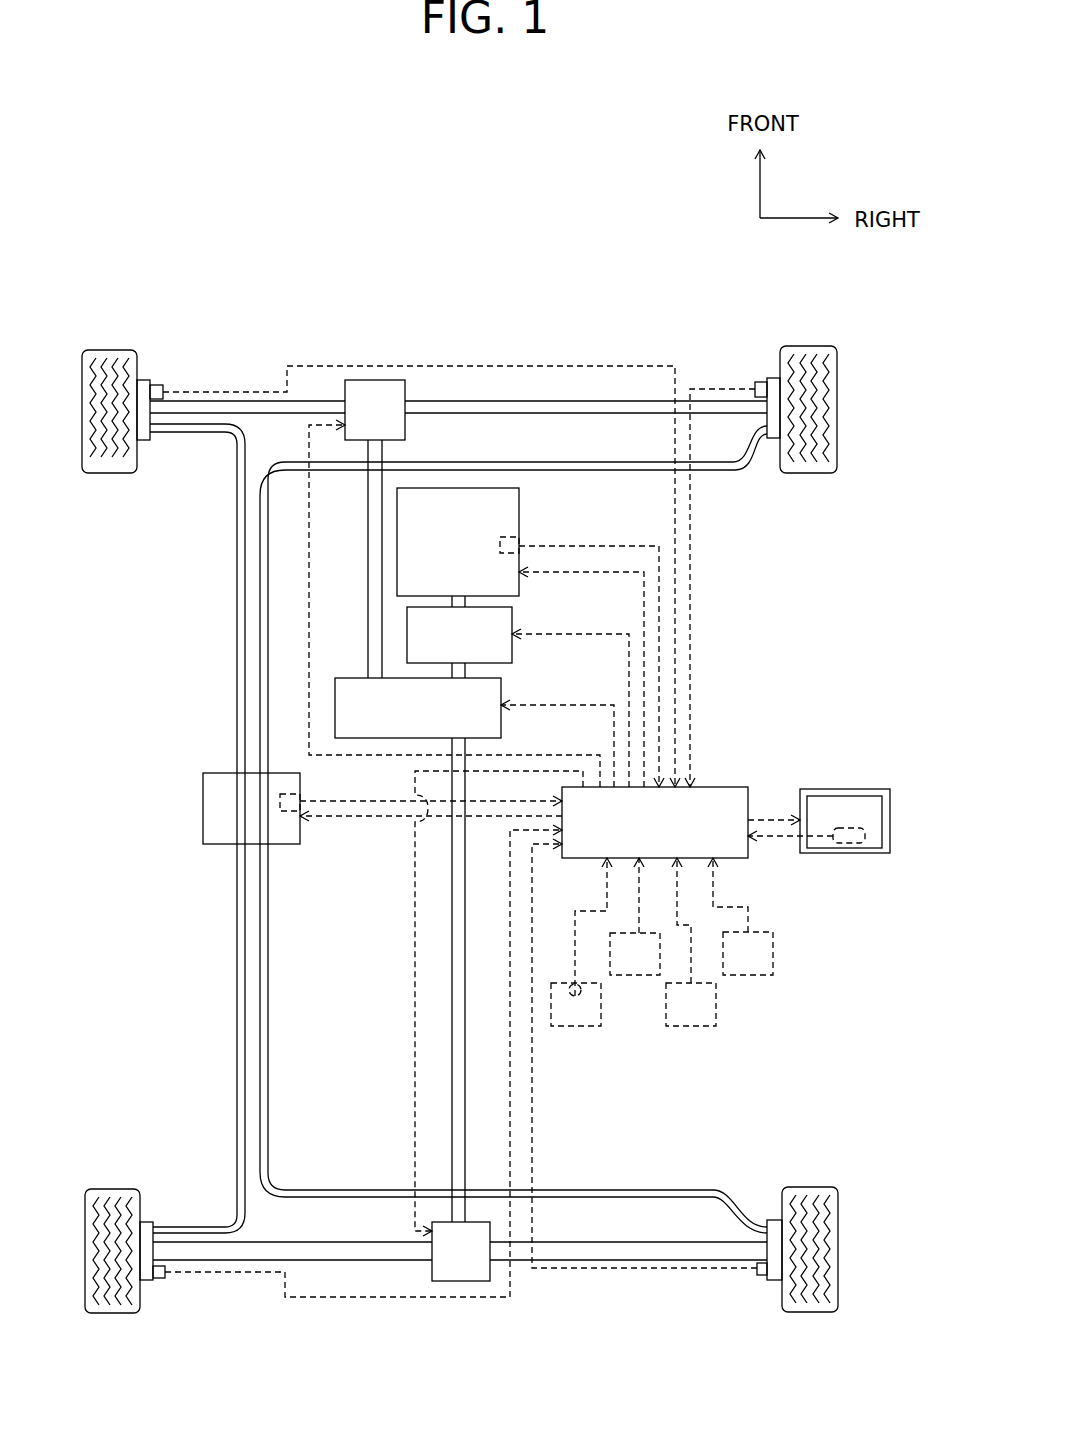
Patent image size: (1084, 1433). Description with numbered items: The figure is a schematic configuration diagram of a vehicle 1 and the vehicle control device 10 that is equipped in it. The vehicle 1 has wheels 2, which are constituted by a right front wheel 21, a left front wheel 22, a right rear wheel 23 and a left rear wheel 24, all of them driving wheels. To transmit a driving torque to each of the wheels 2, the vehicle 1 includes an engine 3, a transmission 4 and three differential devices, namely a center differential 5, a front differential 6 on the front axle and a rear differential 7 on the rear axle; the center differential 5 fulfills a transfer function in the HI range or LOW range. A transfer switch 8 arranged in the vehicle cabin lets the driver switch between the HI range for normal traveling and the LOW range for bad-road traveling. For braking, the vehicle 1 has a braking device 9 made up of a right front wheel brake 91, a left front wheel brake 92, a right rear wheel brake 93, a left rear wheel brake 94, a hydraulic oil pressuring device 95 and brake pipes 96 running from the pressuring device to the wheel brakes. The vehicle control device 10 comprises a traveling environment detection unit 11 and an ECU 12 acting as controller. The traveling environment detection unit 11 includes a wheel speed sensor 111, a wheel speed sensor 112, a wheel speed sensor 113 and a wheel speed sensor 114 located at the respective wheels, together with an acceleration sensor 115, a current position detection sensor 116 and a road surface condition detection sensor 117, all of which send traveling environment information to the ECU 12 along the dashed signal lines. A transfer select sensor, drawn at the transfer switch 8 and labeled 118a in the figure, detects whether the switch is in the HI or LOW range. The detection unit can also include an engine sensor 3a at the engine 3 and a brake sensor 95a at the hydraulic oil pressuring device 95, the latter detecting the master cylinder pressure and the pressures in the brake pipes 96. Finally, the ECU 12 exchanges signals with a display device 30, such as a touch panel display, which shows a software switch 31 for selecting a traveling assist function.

The vehicle 1 is at (158, 252).
The wheels 2 is at (850, 312).
The engine 3 is at (519, 497).
The engine sensor 3a is at (519, 537).
The transmission 4 is at (512, 620).
The center differential 5 is at (501, 690).
The front differential 6 is at (405, 428).
The rear differential 7 is at (432, 1265).
The transfer switch 8 is at (560, 983).
The braking device 9 is at (735, 322).
The vehicle control device 10 is at (768, 700).
The traveling environment detection unit 11 is at (715, 350).
The ECU 12 is at (718, 787).
The right front wheel 21 is at (810, 346).
The left front wheel 22 is at (125, 350).
The right rear wheel 23 is at (820, 1312).
The left rear wheel 24 is at (113, 1313).
The display device 30 is at (838, 787).
The software switch 31 is at (848, 845).
The right front wheel brake 91 is at (770, 378).
The left front wheel brake 92 is at (148, 380).
The right rear wheel brake 93 is at (775, 1280).
The left rear wheel brake 94 is at (148, 1280).
The hydraulic oil pressuring device 95 is at (203, 815).
The brake sensor 95a is at (300, 790).
The brake pipes 96 is at (236, 690).
The wheel speed sensor 111 is at (755, 385).
The wheel speed sensor 112 is at (163, 390).
The wheel speed sensor 113 is at (757, 1275).
The wheel speed sensor 114 is at (165, 1280).
The acceleration sensor 115 is at (750, 975).
The current position detection sensor 116 is at (690, 1026).
The road surface condition detection sensor 117 is at (635, 975).
The brake pedal stroke sensor 118a is at (578, 1026).